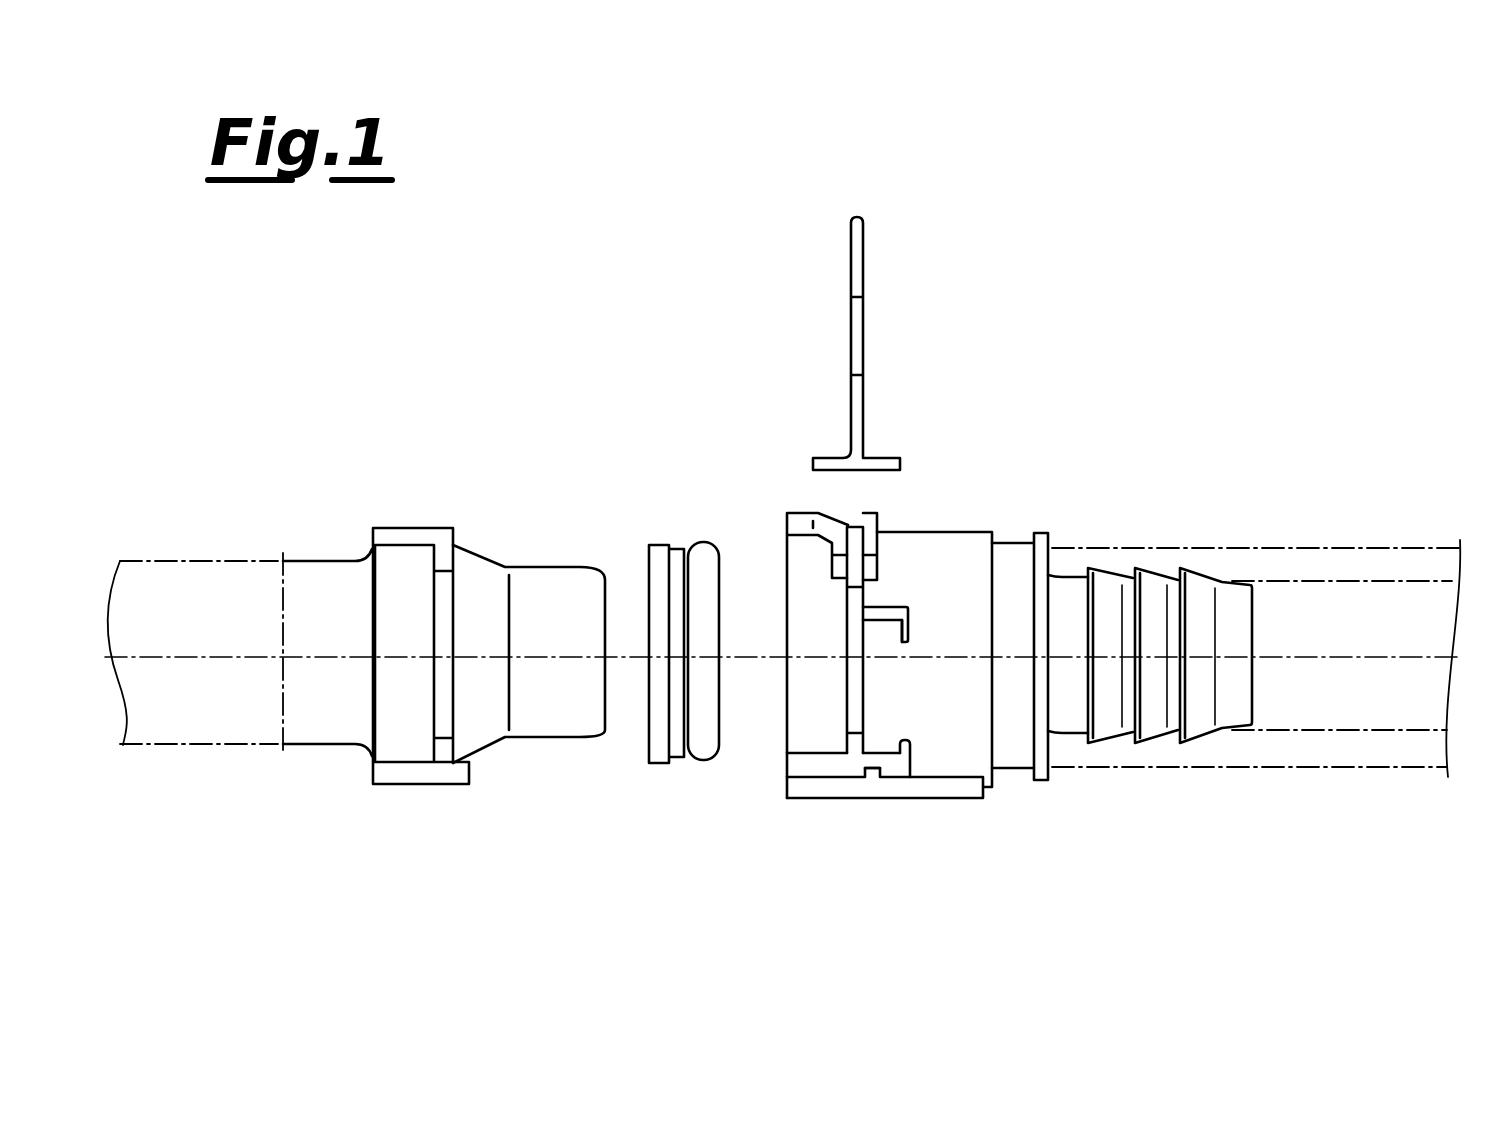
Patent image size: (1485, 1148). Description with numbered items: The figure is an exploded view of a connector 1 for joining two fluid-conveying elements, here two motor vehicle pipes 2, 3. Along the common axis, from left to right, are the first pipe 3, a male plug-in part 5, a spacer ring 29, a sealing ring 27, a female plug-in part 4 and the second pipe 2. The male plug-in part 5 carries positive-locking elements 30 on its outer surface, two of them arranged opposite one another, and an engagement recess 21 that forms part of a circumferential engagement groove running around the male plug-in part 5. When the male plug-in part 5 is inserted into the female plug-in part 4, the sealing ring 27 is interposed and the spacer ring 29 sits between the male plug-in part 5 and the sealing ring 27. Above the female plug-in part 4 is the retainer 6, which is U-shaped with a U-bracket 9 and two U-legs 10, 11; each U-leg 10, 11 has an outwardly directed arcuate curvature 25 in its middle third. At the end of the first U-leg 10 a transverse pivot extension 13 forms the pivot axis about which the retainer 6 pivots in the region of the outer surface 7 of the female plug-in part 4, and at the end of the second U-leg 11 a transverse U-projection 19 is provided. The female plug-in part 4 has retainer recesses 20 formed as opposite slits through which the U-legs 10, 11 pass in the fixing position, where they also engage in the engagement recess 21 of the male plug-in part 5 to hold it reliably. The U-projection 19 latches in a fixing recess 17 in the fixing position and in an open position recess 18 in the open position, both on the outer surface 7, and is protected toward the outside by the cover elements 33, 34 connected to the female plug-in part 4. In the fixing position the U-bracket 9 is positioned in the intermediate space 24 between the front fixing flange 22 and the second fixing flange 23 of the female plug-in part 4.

The connector 1 is at (1236, 244).
The motor vehicle pipe 2 is at (1367, 550).
The motor vehicle pipe 3 is at (183, 557).
The female plug-in part 4 is at (981, 650).
The male plug-in part 5 is at (489, 606).
The retainer 6 is at (822, 300).
The outer surface 7 is at (951, 669).
The U-bracket 9 is at (853, 213).
The first U-leg 10 is at (845, 278).
The second U-leg 11 is at (845, 278).
The pivot extension 13 is at (825, 458).
The fixing recess 17 is at (893, 763).
The open position recess 18 is at (890, 623).
The U-projection 19 is at (887, 455).
The retainer recess 20 is at (852, 705).
The engagement recess 21 is at (448, 705).
The front fixing flange 22 is at (847, 530).
The fixing flange 23 is at (873, 510).
The intermediate space 24 is at (846, 507).
The arcuate curvature 25 is at (858, 335).
The sealing ring 27 is at (705, 760).
The spacer ring 29 is at (657, 763).
The positive-locking element 30 is at (400, 537).
The cover element 33 is at (890, 787).
The cover element 34 is at (887, 608).